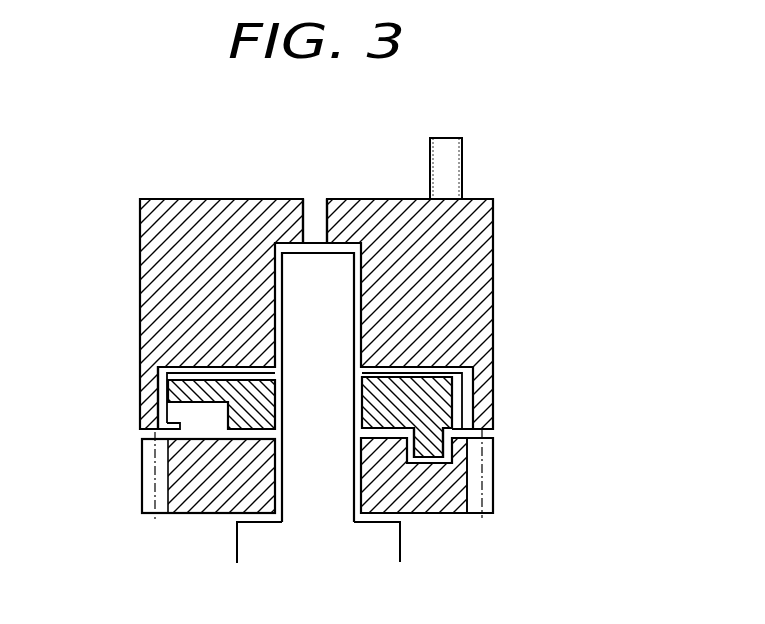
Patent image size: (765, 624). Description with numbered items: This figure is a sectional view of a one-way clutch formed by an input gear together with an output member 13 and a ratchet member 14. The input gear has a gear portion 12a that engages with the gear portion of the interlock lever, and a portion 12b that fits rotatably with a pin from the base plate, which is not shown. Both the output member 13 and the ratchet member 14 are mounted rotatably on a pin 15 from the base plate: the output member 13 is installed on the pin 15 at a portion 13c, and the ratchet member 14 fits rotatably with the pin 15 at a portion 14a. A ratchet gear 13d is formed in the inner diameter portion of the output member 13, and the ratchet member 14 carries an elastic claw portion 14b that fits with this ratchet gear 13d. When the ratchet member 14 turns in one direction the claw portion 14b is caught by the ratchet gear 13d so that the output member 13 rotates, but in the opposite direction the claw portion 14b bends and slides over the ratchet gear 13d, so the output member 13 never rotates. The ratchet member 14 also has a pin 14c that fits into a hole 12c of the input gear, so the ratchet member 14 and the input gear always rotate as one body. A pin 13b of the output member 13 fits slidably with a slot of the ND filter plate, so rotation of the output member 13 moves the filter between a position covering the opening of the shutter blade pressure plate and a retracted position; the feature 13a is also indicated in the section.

The gear portion 12a is at (148, 497).
The portion 12b is at (366, 480).
The hole 12c is at (467, 465).
The output member 13 is at (493, 288).
The insertion hole 13a is at (318, 208).
The pin 13b is at (447, 160).
The portion 13c is at (361, 255).
The ratchet gear 13d is at (165, 414).
The ratchet member 14 is at (222, 380).
The portion 14a is at (362, 409).
The claw portion 14b is at (168, 387).
The pin 14c is at (440, 443).
The pin 15 is at (310, 457).